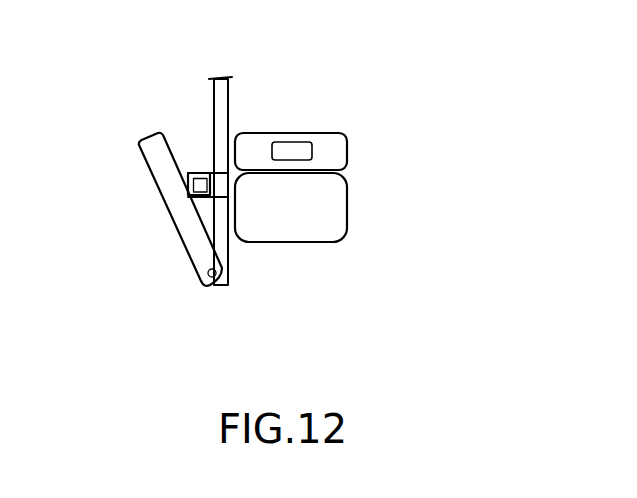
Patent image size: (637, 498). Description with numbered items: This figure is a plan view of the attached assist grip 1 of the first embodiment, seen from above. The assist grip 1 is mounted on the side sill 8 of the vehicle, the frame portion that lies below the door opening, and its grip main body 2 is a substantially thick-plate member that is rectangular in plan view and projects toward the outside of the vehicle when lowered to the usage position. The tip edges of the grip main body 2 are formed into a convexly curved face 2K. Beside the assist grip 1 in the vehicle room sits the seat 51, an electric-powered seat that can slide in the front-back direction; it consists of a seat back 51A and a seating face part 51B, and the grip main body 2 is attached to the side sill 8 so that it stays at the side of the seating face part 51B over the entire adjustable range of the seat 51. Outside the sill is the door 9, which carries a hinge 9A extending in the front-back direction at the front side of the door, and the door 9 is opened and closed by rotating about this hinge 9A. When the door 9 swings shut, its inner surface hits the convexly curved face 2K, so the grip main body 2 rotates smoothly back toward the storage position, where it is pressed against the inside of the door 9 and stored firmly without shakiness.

The assist grip 1 is at (207, 200).
The grip main body 2 is at (202, 181).
The convexly curved face 2K is at (197, 173).
The side sill 8 is at (230, 110).
The door 9 is at (150, 170).
The hinge 9A is at (211, 277).
The seat 51 is at (354, 201).
The seat back 51A is at (350, 145).
The seating face part 51B is at (334, 231).